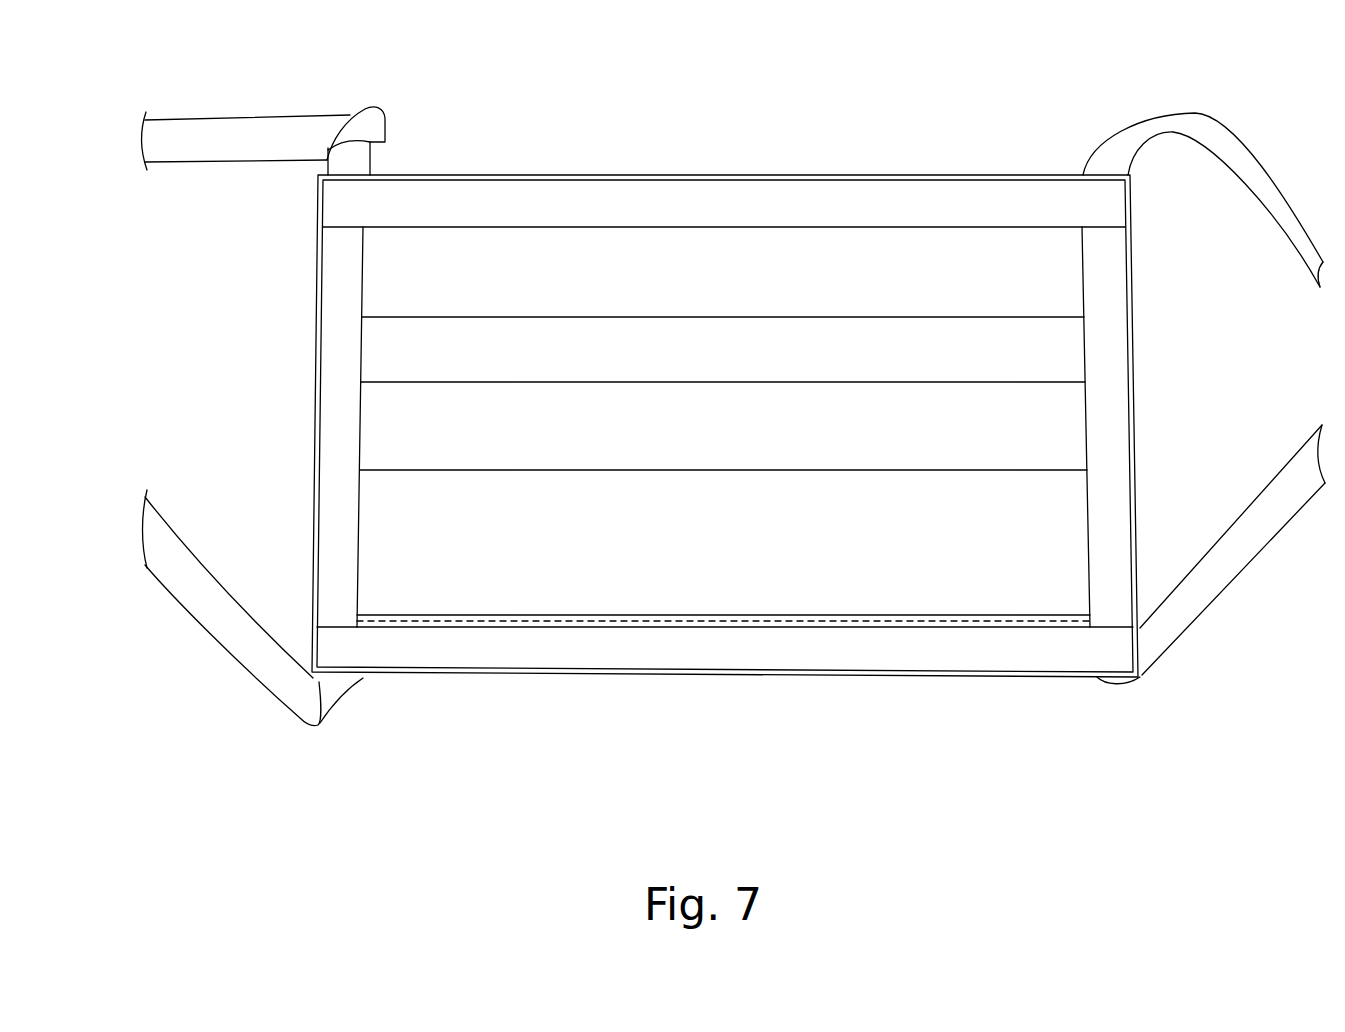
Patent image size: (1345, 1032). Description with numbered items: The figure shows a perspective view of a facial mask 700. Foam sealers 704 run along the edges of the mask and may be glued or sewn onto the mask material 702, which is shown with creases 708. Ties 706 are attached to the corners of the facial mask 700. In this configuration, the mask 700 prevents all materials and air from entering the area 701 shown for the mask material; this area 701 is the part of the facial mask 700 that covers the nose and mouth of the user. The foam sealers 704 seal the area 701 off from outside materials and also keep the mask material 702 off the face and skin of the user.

The facial mask 700 is at (498, 718).
The area 701 is at (398, 425).
The mask material 702 is at (807, 338).
The foam sealers 704 is at (730, 197).
The ties 706 is at (1227, 138).
The creases 708 is at (1042, 470).